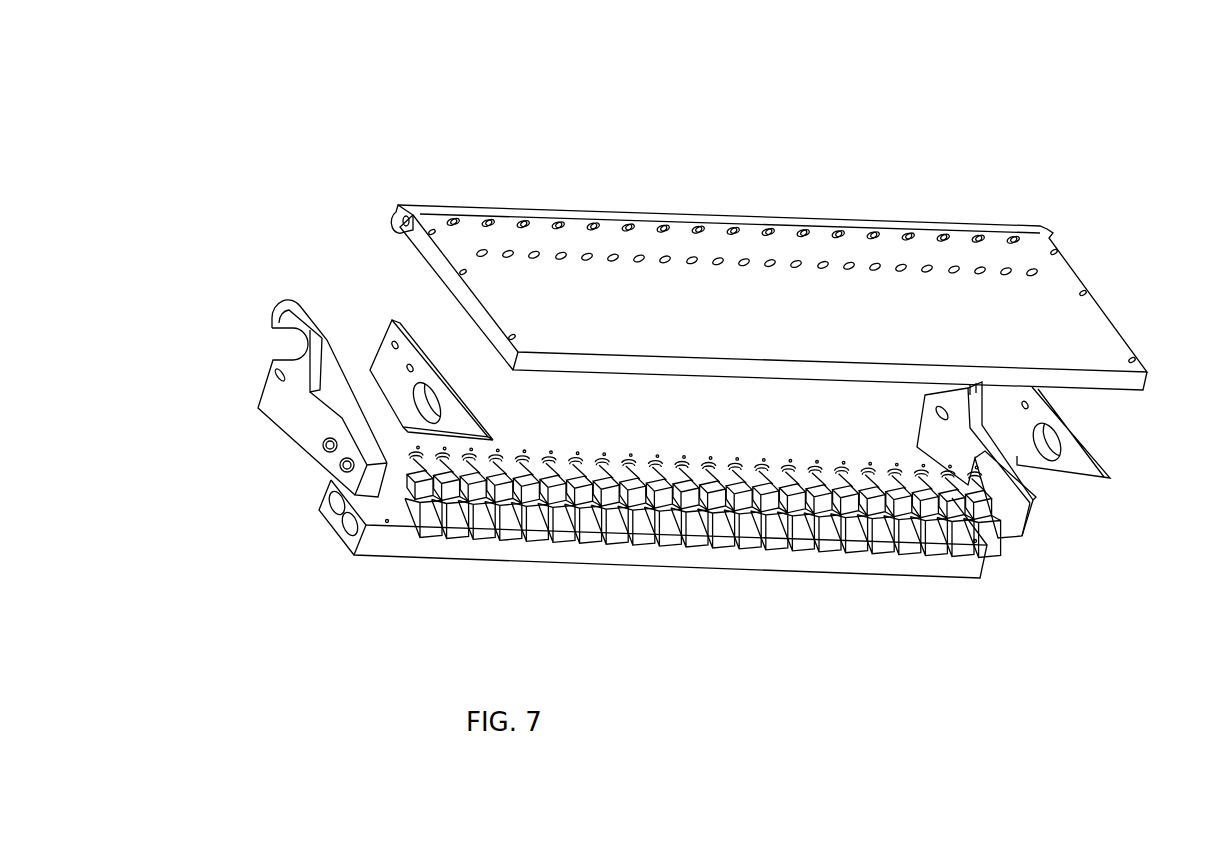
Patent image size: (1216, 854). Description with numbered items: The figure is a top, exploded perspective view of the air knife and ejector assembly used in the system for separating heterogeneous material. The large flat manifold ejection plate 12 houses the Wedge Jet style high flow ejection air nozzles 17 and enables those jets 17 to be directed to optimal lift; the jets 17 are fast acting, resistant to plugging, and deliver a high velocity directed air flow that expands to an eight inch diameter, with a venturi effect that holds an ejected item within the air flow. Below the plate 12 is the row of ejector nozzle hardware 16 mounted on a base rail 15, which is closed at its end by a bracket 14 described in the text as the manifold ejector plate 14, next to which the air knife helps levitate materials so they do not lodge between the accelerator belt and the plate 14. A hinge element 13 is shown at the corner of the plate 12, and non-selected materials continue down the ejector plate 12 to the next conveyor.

The manifold ejection plate 12 is at (1098, 302).
The hinge 13 is at (400, 207).
The manifold ejector plate 14 is at (305, 453).
The base rail 15 is at (334, 537).
The terminal clamps 16 is at (672, 540).
The wedge jet ejection air nozzle 17 is at (398, 433).